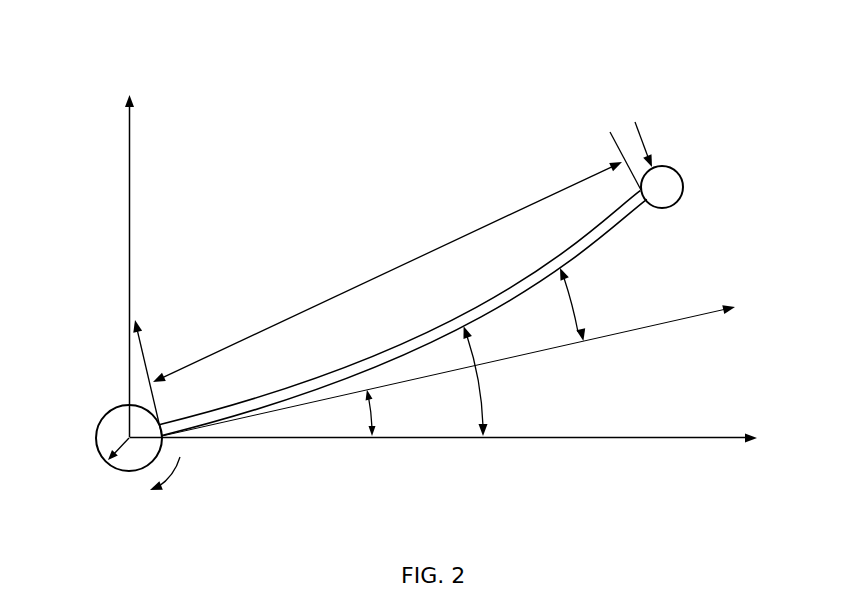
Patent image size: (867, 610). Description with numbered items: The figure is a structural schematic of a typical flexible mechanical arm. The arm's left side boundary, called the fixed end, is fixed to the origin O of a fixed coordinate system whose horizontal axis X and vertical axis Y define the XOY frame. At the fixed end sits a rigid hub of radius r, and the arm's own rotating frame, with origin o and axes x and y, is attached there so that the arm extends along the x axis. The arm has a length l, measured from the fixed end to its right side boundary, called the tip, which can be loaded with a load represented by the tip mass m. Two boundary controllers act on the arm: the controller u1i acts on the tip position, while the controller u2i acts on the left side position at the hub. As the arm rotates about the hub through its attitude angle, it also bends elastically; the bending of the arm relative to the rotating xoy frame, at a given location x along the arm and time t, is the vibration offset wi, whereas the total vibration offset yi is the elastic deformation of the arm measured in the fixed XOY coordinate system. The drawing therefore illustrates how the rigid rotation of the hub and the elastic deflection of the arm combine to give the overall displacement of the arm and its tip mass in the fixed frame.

The Y axis of XOY coordinate system Y is at (110, 266).
The X axis of XOY coordinate system X is at (444, 459).
The x axis of xoy coordinate system x is at (448, 370).
The y axis of xoy coordinate system y is at (147, 369).
The origin of XOY coordinate system O is at (129, 438).
The origin of xoy coordinate system o is at (151, 429).
The radius of rigid hub r is at (126, 454).
The length of flexible mechanical arm l is at (400, 284).
The tip mass m is at (675, 187).
The boundary controller u1i is at (674, 143).
The boundary controller u2i is at (196, 480).
The total vibration offset yi(x,t) yi is at (512, 381).
The vibration offset wi(x,t) wi is at (611, 304).